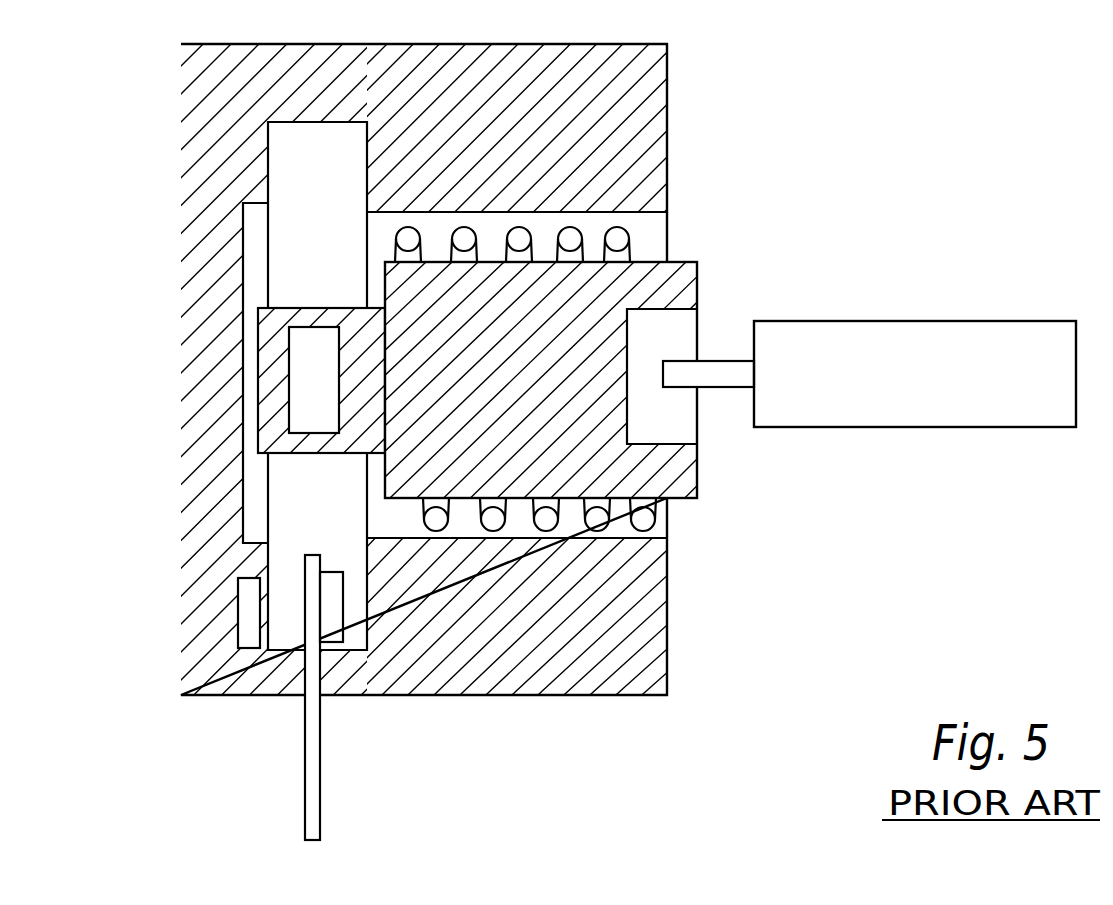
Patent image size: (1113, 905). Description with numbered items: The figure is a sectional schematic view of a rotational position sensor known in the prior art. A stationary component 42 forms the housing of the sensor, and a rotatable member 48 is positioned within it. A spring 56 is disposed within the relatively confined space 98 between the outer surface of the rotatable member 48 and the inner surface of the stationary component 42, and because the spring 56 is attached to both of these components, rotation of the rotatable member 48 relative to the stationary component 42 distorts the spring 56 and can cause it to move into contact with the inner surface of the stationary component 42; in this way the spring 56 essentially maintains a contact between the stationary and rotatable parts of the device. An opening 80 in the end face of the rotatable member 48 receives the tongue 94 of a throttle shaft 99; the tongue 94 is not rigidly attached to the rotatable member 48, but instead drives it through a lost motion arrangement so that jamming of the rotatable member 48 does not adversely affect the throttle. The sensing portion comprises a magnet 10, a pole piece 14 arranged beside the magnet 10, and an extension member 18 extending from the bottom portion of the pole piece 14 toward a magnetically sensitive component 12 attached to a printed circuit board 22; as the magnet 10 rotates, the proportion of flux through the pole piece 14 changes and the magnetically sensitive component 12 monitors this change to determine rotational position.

The stationary component 42 is at (207, 62).
The pole piece 14 is at (298, 175).
The magnet 10 is at (302, 375).
The extension member 18 is at (248, 595).
The printed circuit board 22 is at (305, 717).
The magnetically sensitive component 12 is at (332, 627).
The spring 56 is at (618, 240).
The rotatable member 48 is at (695, 270).
The opening 80 is at (675, 427).
The tongue 94 is at (710, 370).
The confined space 98 is at (667, 533).
The shaft 99 is at (863, 417).